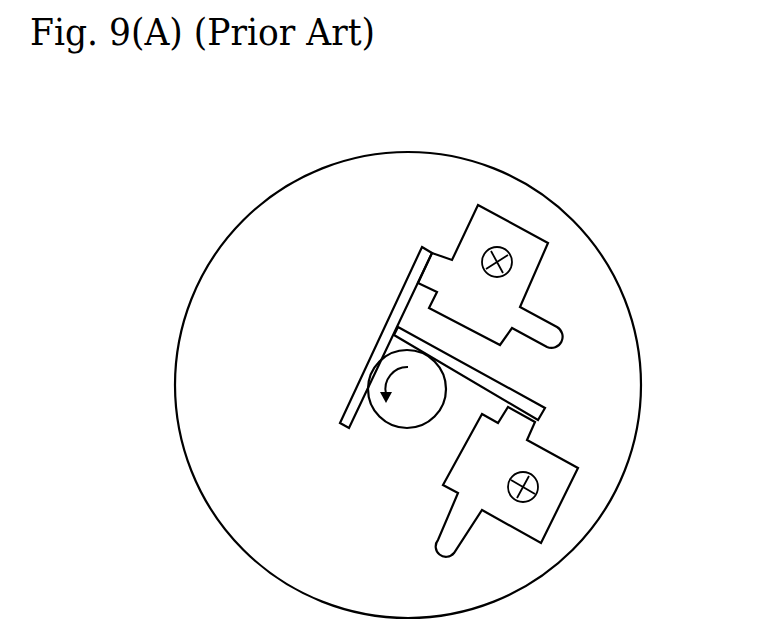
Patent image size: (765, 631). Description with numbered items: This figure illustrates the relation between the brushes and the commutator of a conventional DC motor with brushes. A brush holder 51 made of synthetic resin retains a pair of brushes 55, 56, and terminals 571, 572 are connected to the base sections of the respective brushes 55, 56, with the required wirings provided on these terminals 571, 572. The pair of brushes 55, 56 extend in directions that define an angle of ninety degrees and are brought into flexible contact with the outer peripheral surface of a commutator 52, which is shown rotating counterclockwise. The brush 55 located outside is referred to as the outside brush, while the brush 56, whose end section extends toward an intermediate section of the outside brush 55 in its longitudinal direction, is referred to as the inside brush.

The brush holder 51 is at (609, 274).
The commutator 52 is at (390, 428).
The brush 55 is at (378, 325).
The brush 56 is at (511, 390).
The terminal 571 is at (493, 224).
The terminal 572 is at (547, 512).